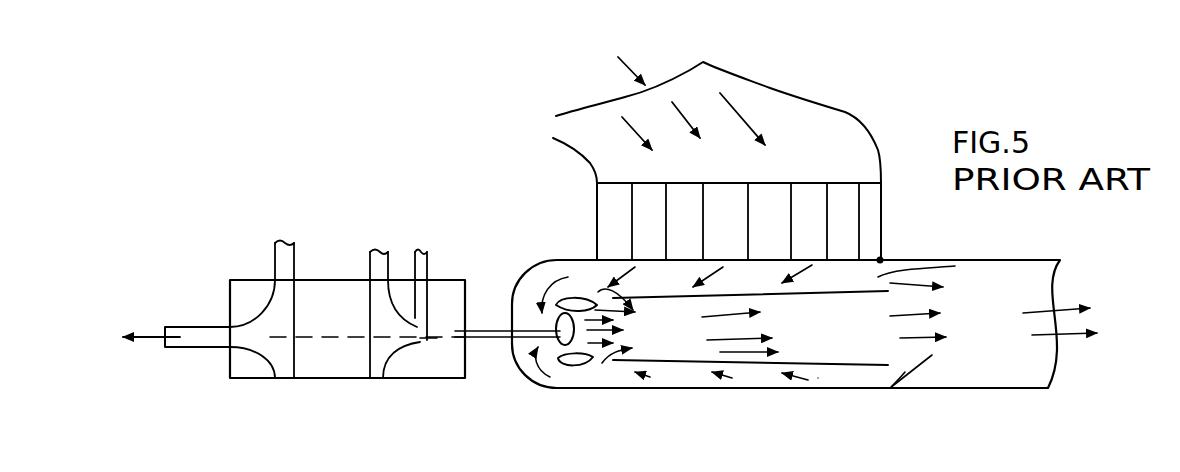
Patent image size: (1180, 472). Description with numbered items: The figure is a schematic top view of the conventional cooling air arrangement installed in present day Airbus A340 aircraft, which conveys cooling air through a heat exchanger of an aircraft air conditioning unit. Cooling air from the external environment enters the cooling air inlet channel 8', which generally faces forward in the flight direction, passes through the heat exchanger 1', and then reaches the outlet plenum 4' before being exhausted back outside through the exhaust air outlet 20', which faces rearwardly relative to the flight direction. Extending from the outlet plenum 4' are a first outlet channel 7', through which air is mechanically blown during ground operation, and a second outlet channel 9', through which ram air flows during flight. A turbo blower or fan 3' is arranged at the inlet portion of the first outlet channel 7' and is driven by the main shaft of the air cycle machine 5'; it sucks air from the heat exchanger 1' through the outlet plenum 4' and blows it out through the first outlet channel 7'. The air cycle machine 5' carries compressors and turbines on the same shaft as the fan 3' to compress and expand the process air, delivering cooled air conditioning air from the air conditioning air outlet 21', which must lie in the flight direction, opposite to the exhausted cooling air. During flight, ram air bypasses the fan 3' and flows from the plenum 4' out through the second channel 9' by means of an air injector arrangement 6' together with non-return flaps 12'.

The heat exchanger 1' is at (753, 221).
The turbo blower or fan 3' is at (545, 297).
The outlet plenum 4' is at (836, 404).
The air cycle machine 5' is at (347, 332).
The air injector arrangement 6' is at (584, 389).
The first outlet channel 7' is at (750, 360).
The cooling air inlet channel 8' is at (717, 108).
The second outlet channel 9' is at (899, 251).
The non-return flaps 12' is at (937, 328).
The exhaust air outlet 20' is at (817, 323).
The air conditioning air outlet 21' is at (154, 319).